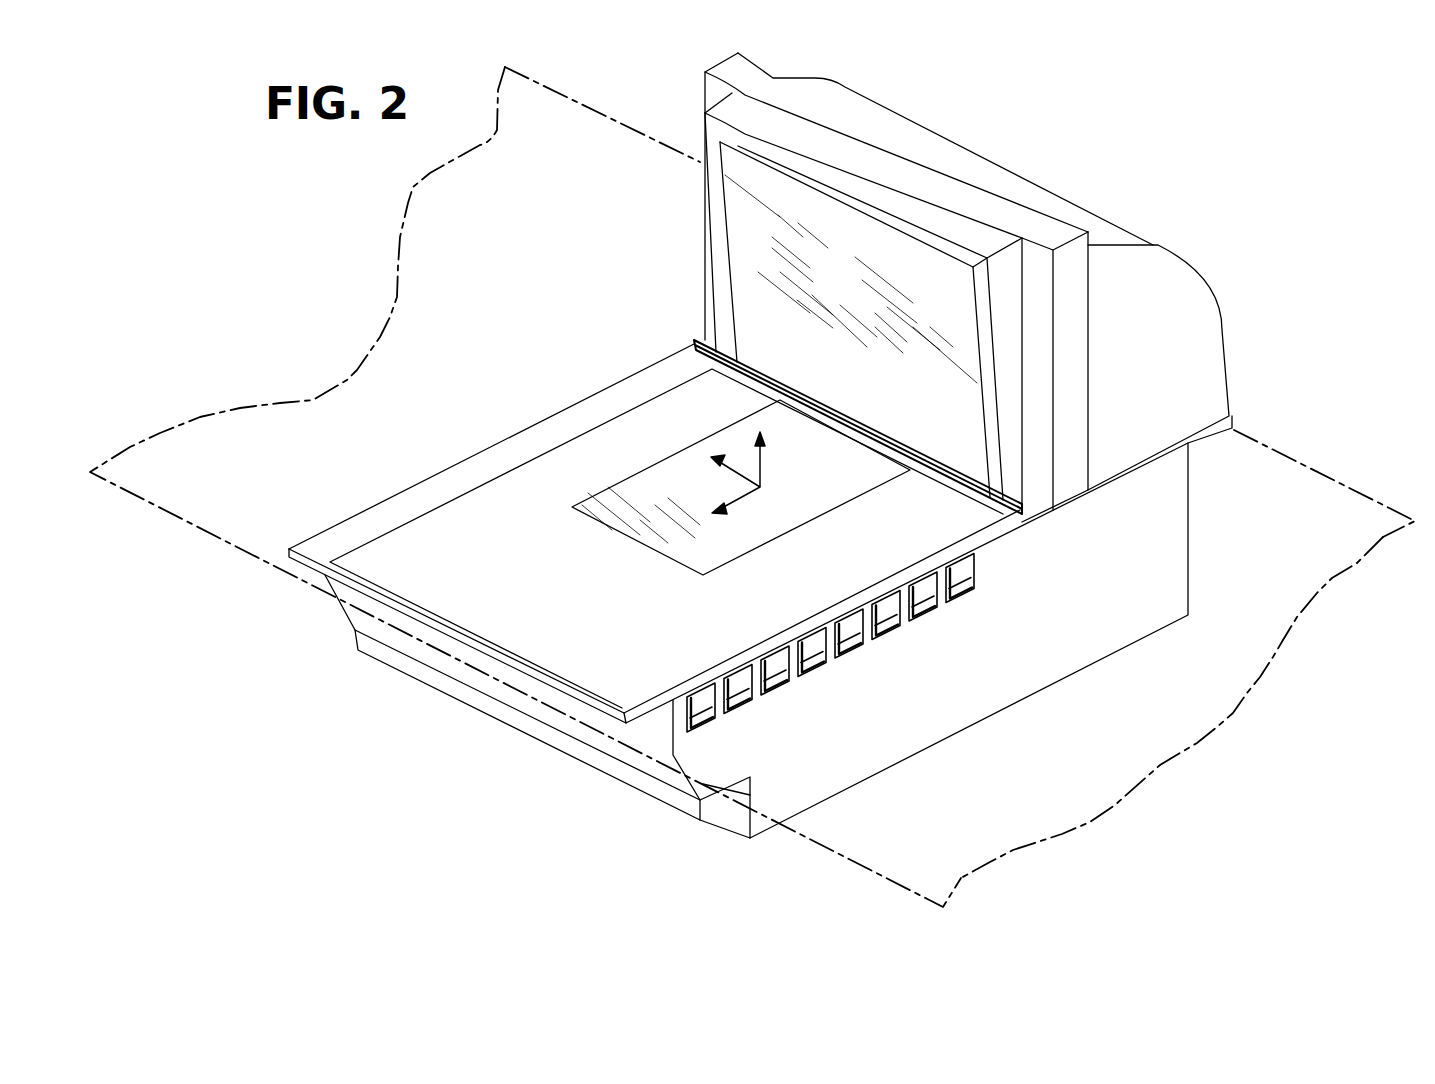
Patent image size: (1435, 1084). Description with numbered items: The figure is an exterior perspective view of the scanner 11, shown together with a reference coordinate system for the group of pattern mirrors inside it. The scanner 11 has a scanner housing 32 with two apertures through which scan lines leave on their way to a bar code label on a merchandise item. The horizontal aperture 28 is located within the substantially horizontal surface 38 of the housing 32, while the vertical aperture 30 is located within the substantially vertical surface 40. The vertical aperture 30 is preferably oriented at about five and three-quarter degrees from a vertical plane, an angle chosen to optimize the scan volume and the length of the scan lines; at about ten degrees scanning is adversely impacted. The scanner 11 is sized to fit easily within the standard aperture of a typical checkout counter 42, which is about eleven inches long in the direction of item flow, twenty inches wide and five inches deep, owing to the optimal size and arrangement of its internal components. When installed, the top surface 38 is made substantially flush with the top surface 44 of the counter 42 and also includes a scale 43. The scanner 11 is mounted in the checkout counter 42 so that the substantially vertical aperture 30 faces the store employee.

The scanner 11 is at (1165, 98).
The horizontal aperture 28 is at (640, 541).
The vertical aperture 30 is at (980, 333).
The scanner housing 32 is at (1220, 328).
The horizontal surface 38 is at (473, 614).
The vertical surface 40 is at (987, 370).
The checkout counter 42 is at (1318, 479).
The scale 43 is at (596, 679).
The top surface 44 is at (1237, 662).